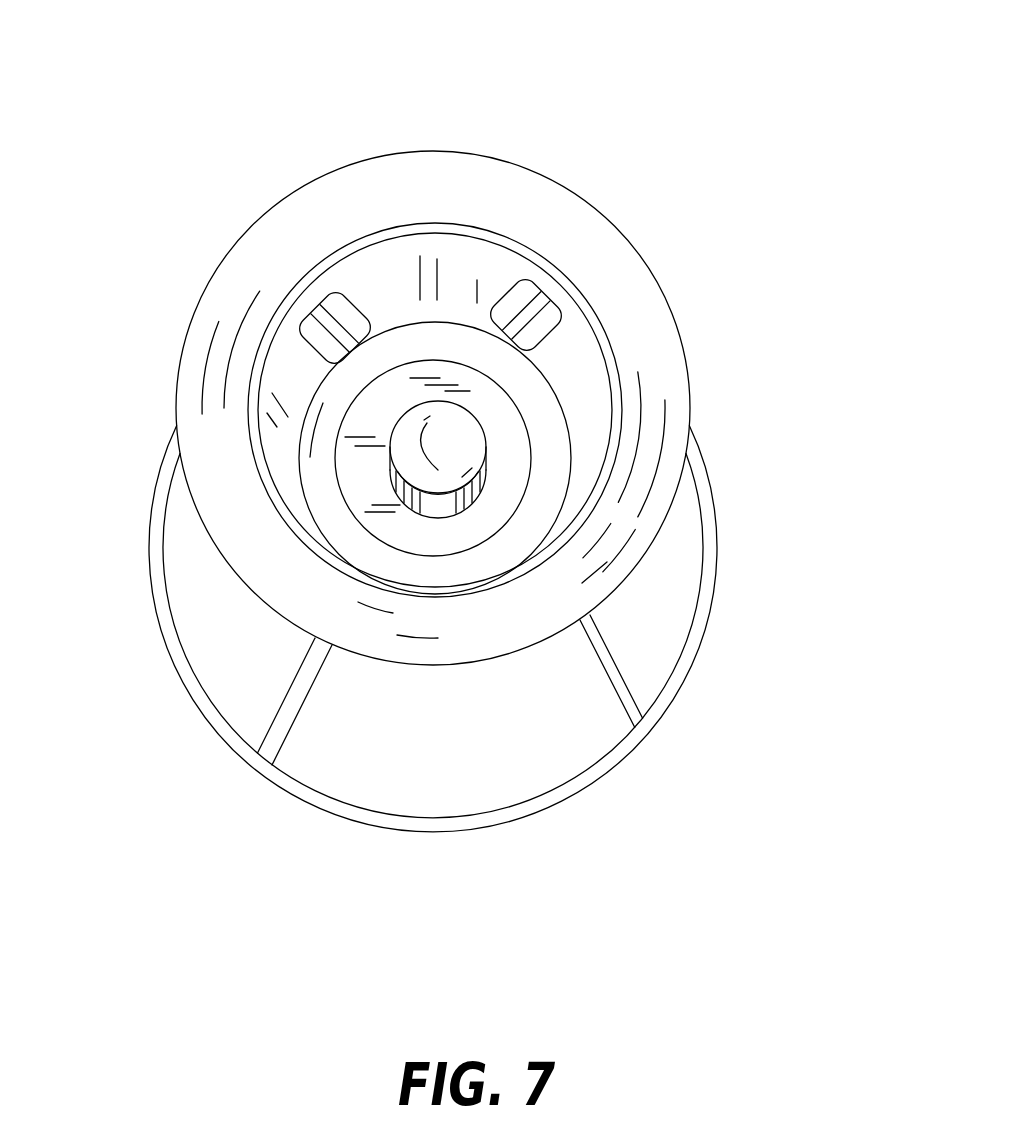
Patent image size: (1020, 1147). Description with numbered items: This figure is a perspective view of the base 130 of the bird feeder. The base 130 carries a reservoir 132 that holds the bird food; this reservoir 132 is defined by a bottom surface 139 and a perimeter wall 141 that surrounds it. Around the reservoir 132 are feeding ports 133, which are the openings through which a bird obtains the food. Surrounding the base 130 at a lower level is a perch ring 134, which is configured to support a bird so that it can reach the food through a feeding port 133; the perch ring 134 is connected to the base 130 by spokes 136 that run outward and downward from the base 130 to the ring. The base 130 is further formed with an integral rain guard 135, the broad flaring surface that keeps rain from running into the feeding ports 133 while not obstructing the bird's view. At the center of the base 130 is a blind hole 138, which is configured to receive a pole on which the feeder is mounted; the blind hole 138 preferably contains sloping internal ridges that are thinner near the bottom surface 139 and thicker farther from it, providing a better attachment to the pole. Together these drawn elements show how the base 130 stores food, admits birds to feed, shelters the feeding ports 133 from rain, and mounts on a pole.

The base 130 is at (781, 73).
The reservoir 132 is at (413, 332).
The feeding ports 133 is at (513, 277).
The perch ring 134 is at (500, 818).
The rain guard 135 is at (176, 438).
The spokes 136 is at (632, 705).
The blind hole 138 is at (450, 477).
The bottom surface 139 is at (460, 355).
The perimeter wall 141 is at (600, 337).